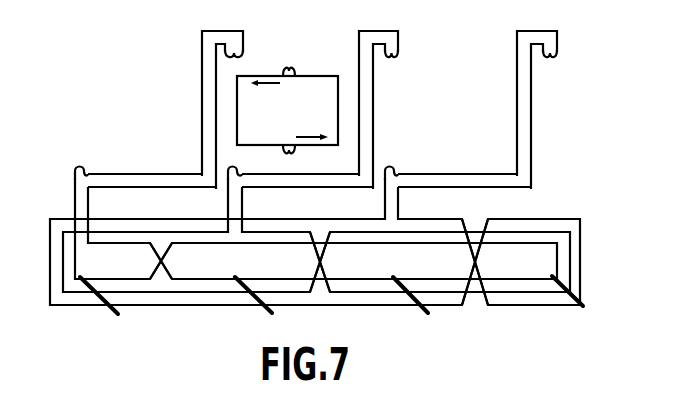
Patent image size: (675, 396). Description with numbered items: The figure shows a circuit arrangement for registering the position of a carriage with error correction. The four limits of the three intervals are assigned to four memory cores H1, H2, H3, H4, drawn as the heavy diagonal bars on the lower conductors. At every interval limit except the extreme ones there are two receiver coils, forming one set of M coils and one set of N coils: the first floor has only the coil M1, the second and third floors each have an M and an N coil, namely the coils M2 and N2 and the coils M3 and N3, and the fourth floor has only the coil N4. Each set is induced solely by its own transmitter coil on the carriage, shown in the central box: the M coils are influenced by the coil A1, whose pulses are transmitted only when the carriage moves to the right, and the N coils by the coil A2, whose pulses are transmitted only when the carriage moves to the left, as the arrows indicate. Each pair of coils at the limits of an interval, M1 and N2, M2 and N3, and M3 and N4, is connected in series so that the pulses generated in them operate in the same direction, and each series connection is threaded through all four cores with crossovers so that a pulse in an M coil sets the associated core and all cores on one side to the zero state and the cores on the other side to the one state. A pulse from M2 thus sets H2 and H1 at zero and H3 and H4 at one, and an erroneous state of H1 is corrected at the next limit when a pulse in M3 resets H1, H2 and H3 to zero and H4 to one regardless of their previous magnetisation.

The M receiver coil M1 is at (80, 166).
The M receiver coil M2 is at (232, 166).
The M receiver coil M3 is at (390, 166).
The N receiver coil N2 is at (233, 59).
The N receiver coil N3 is at (390, 61).
The N receiver coil N4 is at (552, 61).
The transmitter coil A1 is at (303, 130).
The transmitter coil A2 is at (274, 90).
The memory core H1 is at (96, 297).
The memory core H2 is at (251, 297).
The memory core H3 is at (409, 297).
The memory core H4 is at (560, 295).